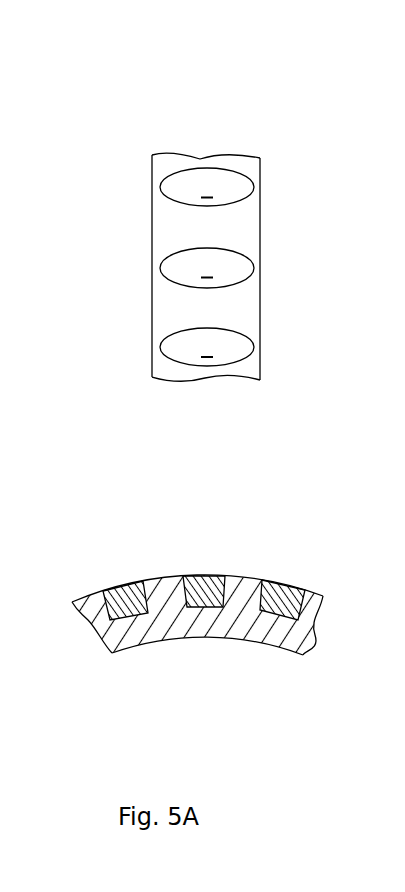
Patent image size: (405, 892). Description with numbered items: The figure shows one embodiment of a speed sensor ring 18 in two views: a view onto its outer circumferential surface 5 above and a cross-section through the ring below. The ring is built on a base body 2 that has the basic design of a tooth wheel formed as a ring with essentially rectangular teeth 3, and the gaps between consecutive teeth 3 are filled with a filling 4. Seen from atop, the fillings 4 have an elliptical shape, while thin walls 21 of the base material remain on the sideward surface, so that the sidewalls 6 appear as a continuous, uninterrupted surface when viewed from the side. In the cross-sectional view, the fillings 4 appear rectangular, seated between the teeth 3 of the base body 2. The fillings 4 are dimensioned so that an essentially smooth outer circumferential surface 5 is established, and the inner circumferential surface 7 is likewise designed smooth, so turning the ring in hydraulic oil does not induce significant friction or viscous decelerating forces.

The speed sensor ring 18 is at (306, 166).
The base body 2 is at (270, 318).
The rectangular teeth 3 is at (84, 601).
The filling 4 is at (122, 590).
The outer circumferential surface 5 is at (191, 308).
The sidewalls 6 is at (144, 244).
The inner circumferential surface 7 is at (232, 645).
The thin walls 21 is at (160, 268).